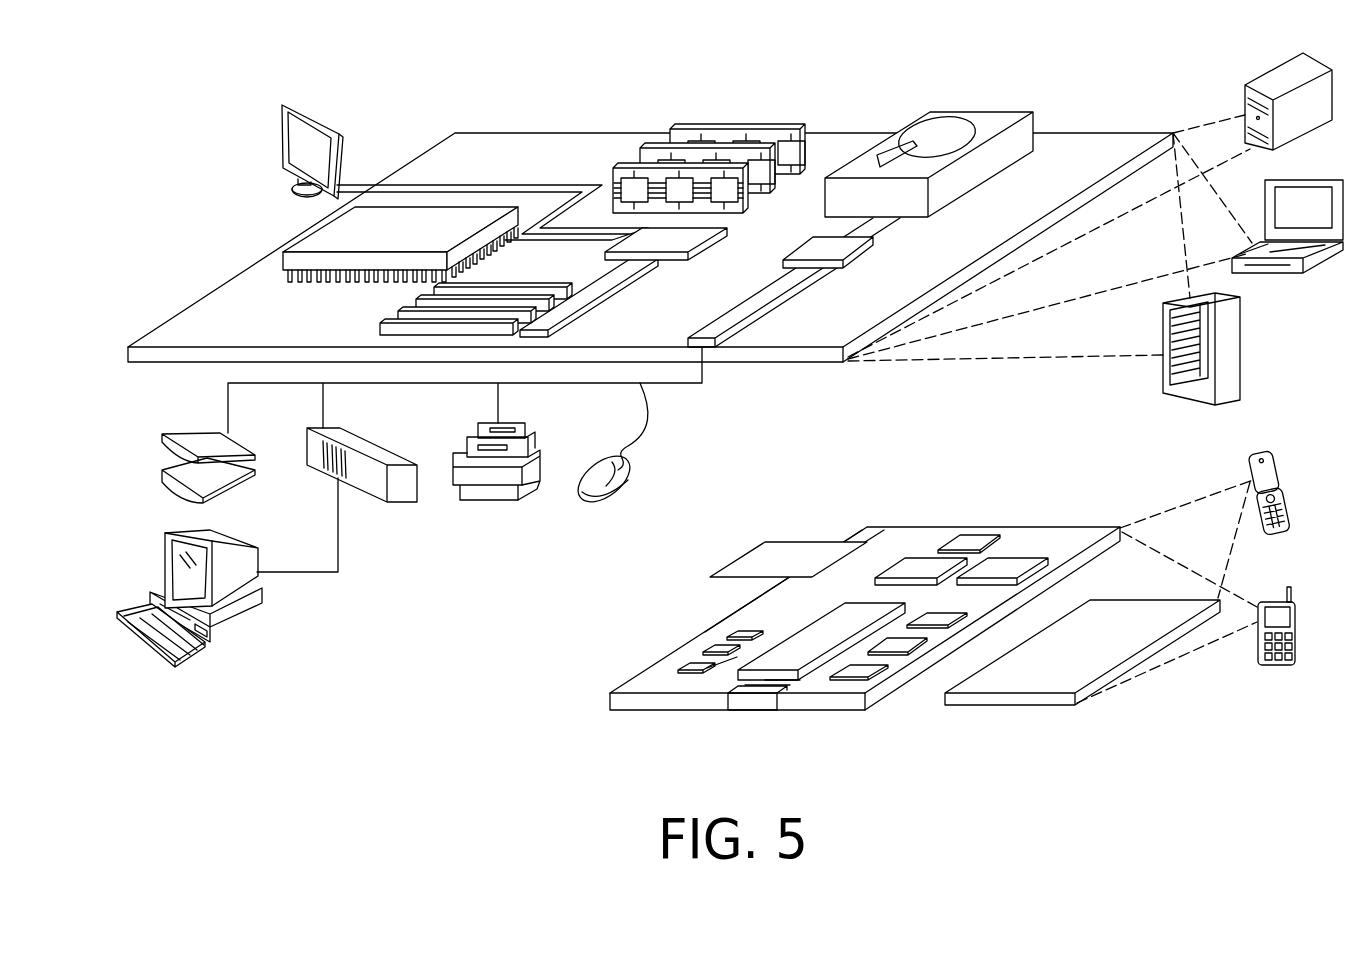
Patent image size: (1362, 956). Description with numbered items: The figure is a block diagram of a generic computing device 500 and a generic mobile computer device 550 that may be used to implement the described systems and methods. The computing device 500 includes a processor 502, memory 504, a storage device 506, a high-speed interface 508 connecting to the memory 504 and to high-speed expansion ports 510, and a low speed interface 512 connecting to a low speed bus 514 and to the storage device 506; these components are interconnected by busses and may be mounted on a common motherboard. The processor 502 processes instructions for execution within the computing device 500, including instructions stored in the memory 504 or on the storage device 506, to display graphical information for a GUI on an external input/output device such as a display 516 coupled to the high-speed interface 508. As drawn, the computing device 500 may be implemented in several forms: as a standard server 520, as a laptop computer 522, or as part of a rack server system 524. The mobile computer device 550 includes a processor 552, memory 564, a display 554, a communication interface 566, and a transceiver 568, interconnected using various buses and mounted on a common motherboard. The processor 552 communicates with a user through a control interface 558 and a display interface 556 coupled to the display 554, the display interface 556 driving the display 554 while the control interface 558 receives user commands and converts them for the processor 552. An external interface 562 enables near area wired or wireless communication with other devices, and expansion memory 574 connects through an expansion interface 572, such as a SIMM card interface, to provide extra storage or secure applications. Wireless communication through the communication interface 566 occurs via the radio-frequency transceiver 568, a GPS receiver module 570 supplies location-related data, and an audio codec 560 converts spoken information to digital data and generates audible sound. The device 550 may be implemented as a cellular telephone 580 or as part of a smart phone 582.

The computing device 500 is at (413, 86).
The processor 502 is at (307, 232).
The memory 504 is at (744, 126).
The storage device 506 is at (968, 111).
The high-speed interface 508 is at (678, 238).
The high-speed expansion ports 510 is at (404, 308).
The low speed interface 512 is at (820, 247).
The low speed bus 514 is at (708, 329).
The display 516 is at (287, 103).
The standard server 520 is at (1266, 80).
The laptop computer 522 is at (1320, 180).
The rack server system 524 is at (1243, 348).
The mobile computer device 550 is at (567, 714).
The processor 552 is at (790, 644).
The display 554 is at (1120, 615).
The display interface 556 is at (870, 670).
The control interface 558 is at (903, 643).
The audio codec 560 is at (942, 617).
The external interface 562 is at (753, 697).
The memory 564 is at (712, 648).
The communication interface 566 is at (920, 562).
The transceiver 568 is at (1008, 562).
The GPS receiver module 570 is at (970, 536).
The expansion interface 572 is at (845, 540).
The expansion memory 574 is at (764, 541).
The cellular telephone 580 is at (1263, 456).
The smart phone 582 is at (1275, 600).